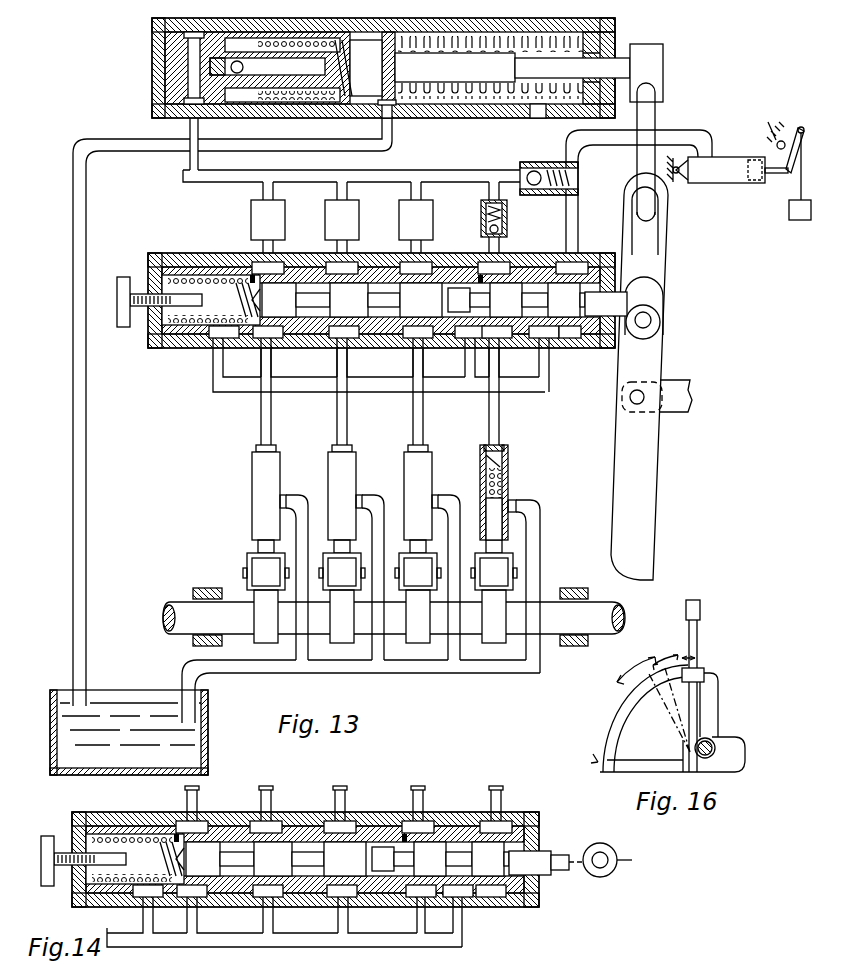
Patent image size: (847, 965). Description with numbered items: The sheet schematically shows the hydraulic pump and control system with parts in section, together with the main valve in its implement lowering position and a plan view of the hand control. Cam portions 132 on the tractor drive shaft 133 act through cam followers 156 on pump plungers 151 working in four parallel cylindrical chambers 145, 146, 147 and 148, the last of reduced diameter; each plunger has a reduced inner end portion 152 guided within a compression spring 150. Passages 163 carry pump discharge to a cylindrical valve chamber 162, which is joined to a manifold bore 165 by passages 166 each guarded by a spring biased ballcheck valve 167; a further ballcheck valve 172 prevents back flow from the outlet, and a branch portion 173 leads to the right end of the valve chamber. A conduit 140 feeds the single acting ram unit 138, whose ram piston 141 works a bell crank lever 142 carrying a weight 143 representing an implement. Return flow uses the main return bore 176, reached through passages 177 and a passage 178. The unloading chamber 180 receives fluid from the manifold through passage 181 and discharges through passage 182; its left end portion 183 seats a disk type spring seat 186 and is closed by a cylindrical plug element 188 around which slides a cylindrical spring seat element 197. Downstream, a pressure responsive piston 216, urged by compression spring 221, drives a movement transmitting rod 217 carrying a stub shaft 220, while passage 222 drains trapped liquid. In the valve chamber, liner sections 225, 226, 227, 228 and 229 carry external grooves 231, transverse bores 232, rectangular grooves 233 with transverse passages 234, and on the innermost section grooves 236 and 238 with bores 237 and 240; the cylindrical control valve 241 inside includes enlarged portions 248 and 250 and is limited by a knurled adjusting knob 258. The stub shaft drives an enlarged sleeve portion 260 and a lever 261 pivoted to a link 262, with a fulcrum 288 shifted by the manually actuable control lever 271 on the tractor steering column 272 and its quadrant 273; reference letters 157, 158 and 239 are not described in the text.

In FIG. 13, the cam portions 132 is at (258, 645).
In FIG. 13, the tractor drive shaft 133 is at (181, 602).
In FIG. 13, the single acting ram unit 138 is at (723, 157).
In FIG. 13, the conduit 140 is at (591, 146).
In FIG. 13, the ram piston 141 is at (748, 181).
In FIG. 13, the bell crank lever 142 is at (796, 128).
In FIG. 13, the weight 143 is at (789, 210).
In FIG. 13, the cylindrical chamber 145 is at (252, 485).
In FIG. 13, the cylindrical chamber 146 is at (328, 485).
In FIG. 13, the cylindrical chamber 147 is at (404, 485).
In FIG. 13, the cylindrical chamber 148 is at (480, 485).
In FIG. 13, the compression spring 150 is at (508, 467).
In FIG. 13, the pump plunger 151 is at (258, 548).
In FIG. 13, the reduced inner end portion 152 is at (506, 489).
In FIG. 13, the cam followers 156 is at (247, 571).
In FIG. 13, the return manifold 157 is at (417, 697).
In FIG. 13, the outlet pipe 158 is at (531, 523).
In FIG. 13, the cylindrical valve chamber 162 is at (381, 290).
In FIG. 14, the cylindrical valve chamber 162 is at (305, 850).
In FIG. 13, the passages 163 is at (260, 421).
In FIG. 14, the passages 163 is at (421, 909).
In FIG. 13, the horizontal bore 165 is at (459, 155).
In FIG. 13, the passages 166 is at (280, 250).
In FIG. 14, the passages 166 is at (285, 809).
In FIG. 13, the spring biased ballcheck valve 167 is at (286, 222).
In FIG. 13, the spring biased ballcheck valve 172 is at (547, 196).
In FIG. 13, the branch portion 173 is at (579, 219).
In FIG. 14, the branch portion 173 is at (502, 809).
In FIG. 13, the bore 176 is at (391, 405).
In FIG. 14, the bore 176 is at (323, 955).
In FIG. 13, the passages 177 is at (377, 359).
In FIG. 14, the passages 177 is at (284, 916).
In FIG. 13, the passage 178 is at (510, 351).
In FIG. 14, the passage 178 is at (449, 916).
In FIG. 13, the cylindrical unloading chamber 180 is at (496, 79).
In FIG. 13, the passage 181 is at (190, 122).
In FIG. 13, the horizontal discharge passage 182 is at (384, 120).
In FIG. 13, the left end portion 183 is at (370, 104).
In FIG. 13, the disk type spring seat 186 is at (348, 70).
In FIG. 13, the cylindrical plug element 188 is at (152, 76).
In FIG. 13, the cylindrical spring seat element 197 is at (289, 40).
In FIG. 13, the pressure responsive piston 216 is at (388, 55).
In FIG. 13, the movement transmitting rod 217 is at (620, 58).
In FIG. 13, the stub shaft 220 is at (664, 60).
In FIG. 13, the compression spring 221 is at (537, 40).
In FIG. 13, the fluid return passage 222 is at (529, 120).
In FIG. 13, the liner section 225 is at (195, 321).
In FIG. 14, the liner section 225 is at (119, 881).
In FIG. 13, the liner section 226 is at (295, 351).
In FIG. 14, the liner section 226 is at (220, 909).
In FIG. 13, the liner section 227 is at (371, 351).
In FIG. 14, the liner section 227 is at (295, 909).
In FIG. 13, the liner section 228 is at (434, 351).
In FIG. 14, the liner section 228 is at (372, 909).
In FIG. 13, the liner section 229 is at (584, 347).
In FIG. 14, the liner section 229 is at (533, 920).
In FIG. 13, the circumferential external grooves 231 is at (266, 252).
In FIG. 14, the circumferential external grooves 231 is at (181, 814).
In FIG. 13, the transverse bores 232 is at (279, 300).
In FIG. 14, the transverse bores 232 is at (203, 859).
In FIG. 13, the circumferential external grooves 233 is at (360, 253).
In FIG. 14, the circumferential external grooves 233 is at (365, 809).
In FIG. 13, the transverse passages 234 is at (349, 300).
In FIG. 14, the transverse passages 234 is at (273, 859).
In FIG. 13, the circumferential external groove 236 is at (553, 359).
In FIG. 14, the circumferential external groove 236 is at (493, 906).
In FIG. 13, the transverse bore 237 is at (564, 300).
In FIG. 14, the transverse bore 237 is at (488, 859).
In FIG. 13, the circumferential external groove 238 is at (525, 257).
In FIG. 14, the circumferential external groove 238 is at (444, 814).
In FIG. 13, the port 239 is at (474, 351).
In FIG. 13, the transverse bores 240 is at (506, 300).
In FIG. 14, the transverse bores 240 is at (430, 859).
In FIG. 13, the cylindrical control valve 241 is at (421, 300).
In FIG. 14, the cylindrical control valve 241 is at (345, 859).
In FIG. 13, the enlarged cylindrical portion 248 is at (460, 300).
In FIG. 13, the enlarged cylindrical portion 250 is at (606, 304).
In FIG. 14, the enlarged cylindrical portion 250 is at (541, 851).
In FIG. 13, the knurled adjusting knob 258 is at (115, 288).
In FIG. 14, the knurled adjusting knob 258 is at (44, 846).
In FIG. 13, the enlarged portion 260 is at (665, 303).
In FIG. 14, the enlarged portion 260 is at (600, 852).
In FIG. 13, the lever 261 is at (658, 446).
In FIG. 13, the link 262 is at (673, 388).
In FIG. 13, the fulcrum 288 is at (636, 390).
In FIG. 16, the manually actuable control lever 271 is at (700, 609).
In FIG. 16, the tractor steering column 272 is at (715, 745).
In FIG. 16, the quadrant 273 is at (628, 736).